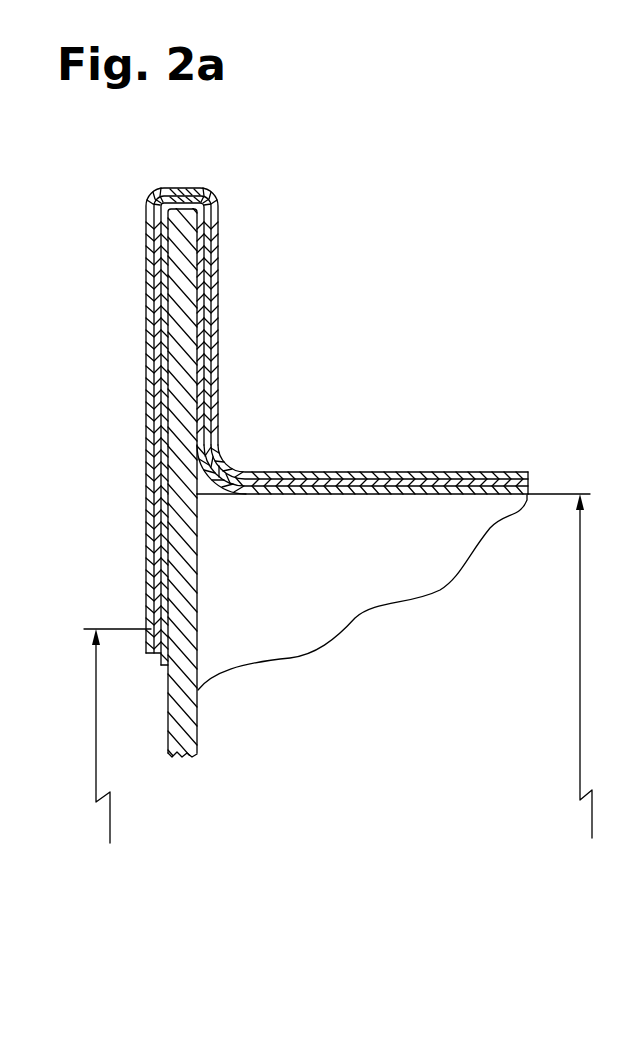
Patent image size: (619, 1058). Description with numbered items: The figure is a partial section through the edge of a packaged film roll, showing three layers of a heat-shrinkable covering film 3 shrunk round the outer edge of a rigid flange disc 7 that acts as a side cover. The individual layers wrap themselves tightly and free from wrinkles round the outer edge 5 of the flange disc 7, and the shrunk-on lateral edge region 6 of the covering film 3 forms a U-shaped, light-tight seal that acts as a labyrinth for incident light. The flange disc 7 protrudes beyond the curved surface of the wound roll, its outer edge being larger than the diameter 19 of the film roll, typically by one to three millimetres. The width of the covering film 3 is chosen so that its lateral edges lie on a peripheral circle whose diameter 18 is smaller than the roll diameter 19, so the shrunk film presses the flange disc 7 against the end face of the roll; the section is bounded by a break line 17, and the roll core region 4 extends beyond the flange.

The covering film 3 is at (374, 478).
The core plate / rail 4 is at (158, 723).
The outer edge 5 is at (182, 250).
The lateral edge region 6 is at (182, 172).
The flange disc 7 is at (178, 560).
The break line / section 17 is at (358, 588).
The diameter 18 is at (117, 753).
The diameter 19 is at (568, 683).